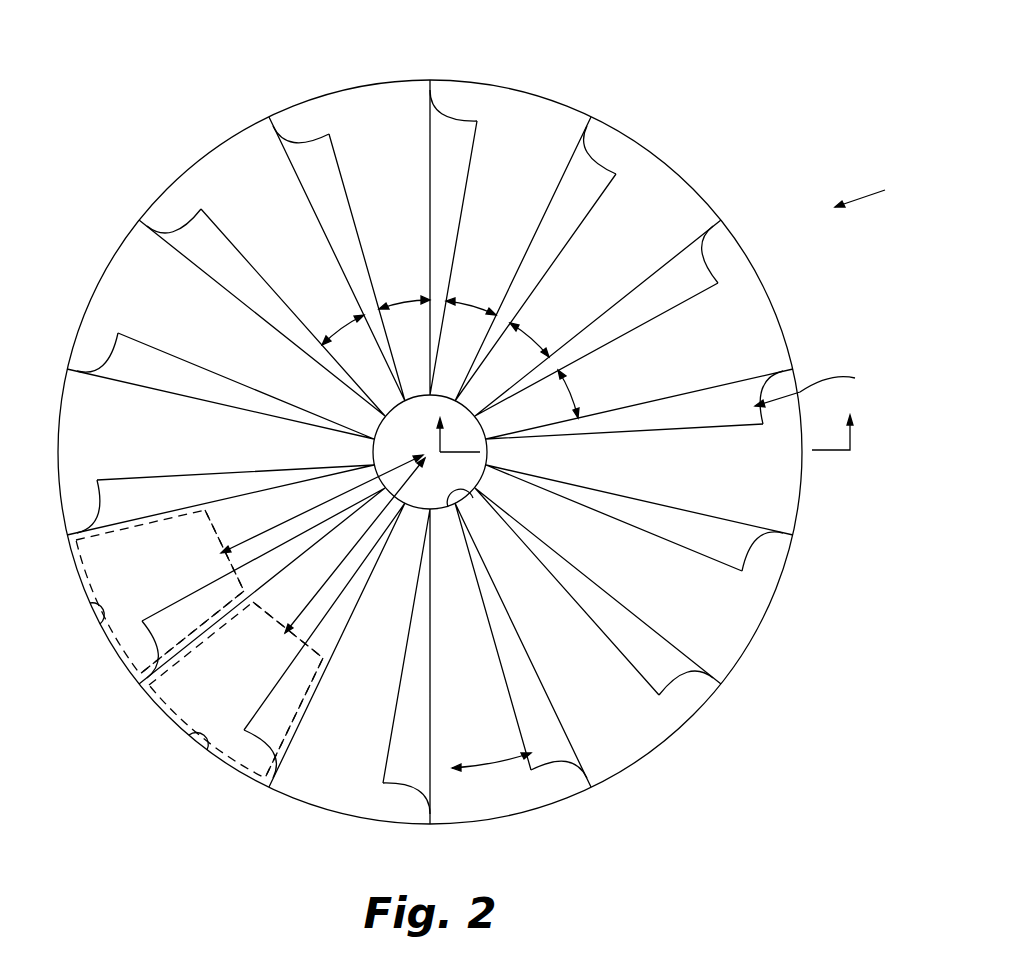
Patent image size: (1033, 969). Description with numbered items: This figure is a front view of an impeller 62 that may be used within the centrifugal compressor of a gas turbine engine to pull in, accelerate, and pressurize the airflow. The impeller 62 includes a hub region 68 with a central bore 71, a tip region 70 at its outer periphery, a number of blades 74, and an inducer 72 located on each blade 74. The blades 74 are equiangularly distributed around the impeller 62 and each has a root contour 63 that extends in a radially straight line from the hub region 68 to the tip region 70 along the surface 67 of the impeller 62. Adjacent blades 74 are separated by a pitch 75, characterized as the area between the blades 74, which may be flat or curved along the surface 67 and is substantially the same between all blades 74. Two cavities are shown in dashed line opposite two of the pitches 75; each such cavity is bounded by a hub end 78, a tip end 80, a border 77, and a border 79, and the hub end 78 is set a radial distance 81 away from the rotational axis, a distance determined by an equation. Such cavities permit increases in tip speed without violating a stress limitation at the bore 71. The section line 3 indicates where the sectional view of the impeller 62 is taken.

The section line 3- 3 is at (641, 452).
The impeller 62 is at (877, 187).
The root contour 63 is at (430, 413).
The surface 67 is at (657, 180).
The hub region 68 is at (377, 452).
The tip region 70 is at (828, 381).
The bore 71 is at (484, 502).
The inducer 72 is at (623, 150).
The blades 74 is at (643, 279).
The pitch 75 is at (542, 344).
The border 77 is at (201, 606).
The hub end 78 is at (320, 655).
The border 79 is at (300, 718).
The tip end 80 is at (199, 742).
The radial distance 81 is at (357, 553).